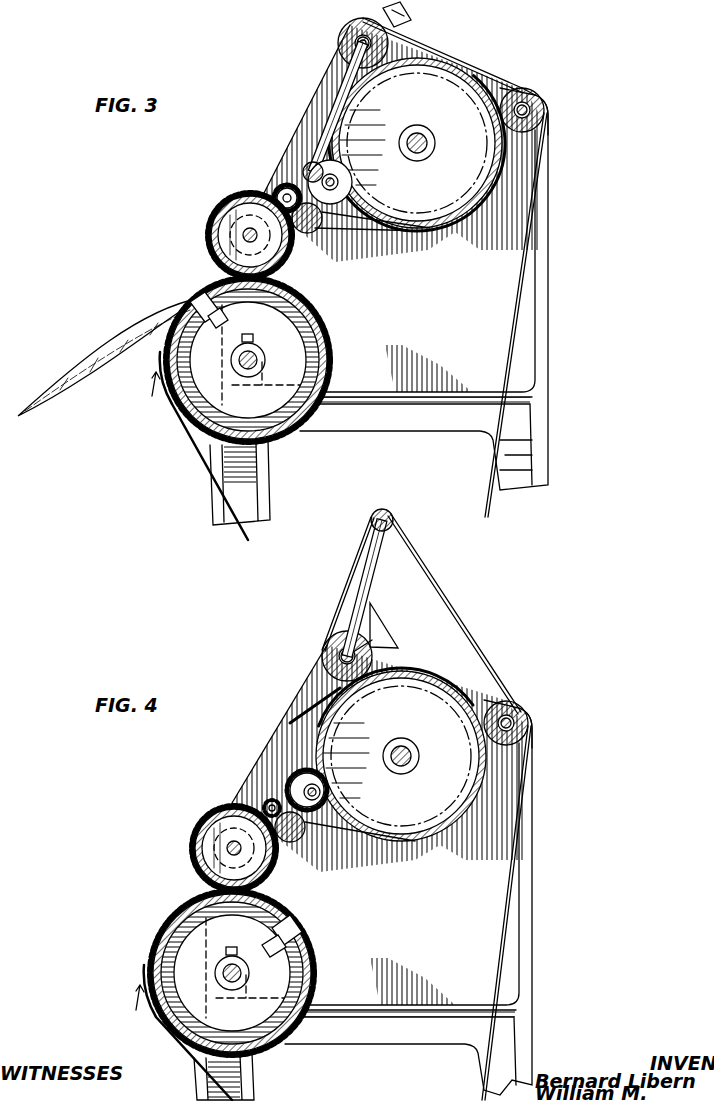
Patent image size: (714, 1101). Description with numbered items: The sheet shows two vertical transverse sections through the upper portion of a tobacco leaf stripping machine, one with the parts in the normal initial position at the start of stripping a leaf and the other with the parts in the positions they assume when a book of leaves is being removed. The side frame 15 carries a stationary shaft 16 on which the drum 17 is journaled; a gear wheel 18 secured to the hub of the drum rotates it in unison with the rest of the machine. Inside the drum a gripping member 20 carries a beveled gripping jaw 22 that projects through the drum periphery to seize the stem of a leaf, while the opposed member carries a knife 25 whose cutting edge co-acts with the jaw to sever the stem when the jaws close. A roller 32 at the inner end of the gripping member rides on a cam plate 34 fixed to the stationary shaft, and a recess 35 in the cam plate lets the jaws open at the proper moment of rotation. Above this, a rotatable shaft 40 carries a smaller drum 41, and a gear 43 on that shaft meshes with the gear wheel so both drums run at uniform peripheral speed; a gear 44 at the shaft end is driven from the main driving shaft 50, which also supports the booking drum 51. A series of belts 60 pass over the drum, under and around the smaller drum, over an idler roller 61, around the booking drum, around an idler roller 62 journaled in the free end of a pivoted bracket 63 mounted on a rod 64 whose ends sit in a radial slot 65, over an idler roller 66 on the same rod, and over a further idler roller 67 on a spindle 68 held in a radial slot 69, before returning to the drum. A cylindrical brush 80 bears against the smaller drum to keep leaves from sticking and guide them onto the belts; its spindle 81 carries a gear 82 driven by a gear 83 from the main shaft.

In FIG. 3, the side frame 15 is at (546, 288).
In FIG. 4, the side frame 15 is at (526, 950).
In FIG. 3, the stationary shaft 16 is at (258, 360).
In FIG. 4, the stationary shaft 16 is at (216, 968).
In FIG. 3, the drum 17 is at (267, 360).
In FIG. 4, the drum 17 is at (227, 973).
In FIG. 3, the gear wheel 18 is at (326, 360).
In FIG. 4, the gear wheel 18 is at (232, 973).
In FIG. 3, the gripping member 20 is at (195, 318).
In FIG. 3, the gripping jaw 22 is at (198, 300).
In FIG. 4, the gripping jaw 22 is at (300, 925).
In FIG. 3, the knife 25 is at (205, 305).
In FIG. 4, the knife 25 is at (300, 940).
In FIG. 3, the roller 32 is at (226, 322).
In FIG. 4, the roller 32 is at (245, 968).
In FIG. 3, the cam plate 34 is at (300, 306).
In FIG. 4, the cam plate 34 is at (292, 988).
In FIG. 3, the recess 35 is at (170, 345).
In FIG. 4, the recess 35 is at (175, 950).
In FIG. 3, the rotatable shaft 40 is at (243, 232).
In FIG. 4, the rotatable shaft 40 is at (228, 850).
In FIG. 3, the drum 41 is at (249, 228).
In FIG. 4, the drum 41 is at (207, 848).
In FIG. 3, the gear 43 is at (230, 203).
In FIG. 4, the gear 44 is at (195, 830).
In FIG. 3, the main driving shaft 50 is at (417, 156).
In FIG. 4, the main driving shaft 50 is at (401, 765).
In FIG. 3, the booking drum 51 is at (444, 128).
In FIG. 4, the booking drum 51 is at (420, 756).
In FIG. 3, the belt 60 is at (470, 72).
In FIG. 4, the belt 60 is at (357, 561).
In FIG. 3, the idler roller 61 is at (320, 226).
In FIG. 4, the idler roller 61 is at (345, 839).
In FIG. 3, the idler roller 62 is at (306, 152).
In FIG. 4, the idler roller 62 is at (392, 514).
In FIG. 3, the pivoted bracket 63 is at (345, 65).
In FIG. 4, the pivoted bracket 63 is at (372, 580).
In FIG. 3, the rod 64 is at (340, 38).
In FIG. 4, the rod 64 is at (324, 656).
In FIG. 3, the slot 65 is at (350, 24).
In FIG. 3, the idler roller 66 is at (405, 27).
In FIG. 4, the idler roller 66 is at (330, 642).
In FIG. 3, the idler roller 67 is at (526, 92).
In FIG. 4, the idler roller 67 is at (528, 714).
In FIG. 3, the spindle 68 is at (549, 105).
In FIG. 4, the spindle 68 is at (533, 725).
In FIG. 3, the slot 69 is at (545, 97).
In FIG. 3, the cylindrical brush 80 is at (275, 172).
In FIG. 4, the cylindrical brush 80 is at (262, 808).
In FIG. 4, the spindle 81 is at (268, 800).
In FIG. 3, the gear 82 is at (283, 186).
In FIG. 4, the gear 82 is at (292, 776).
In FIG. 3, the gear 83 is at (310, 162).
In FIG. 4, the gear 83 is at (304, 771).